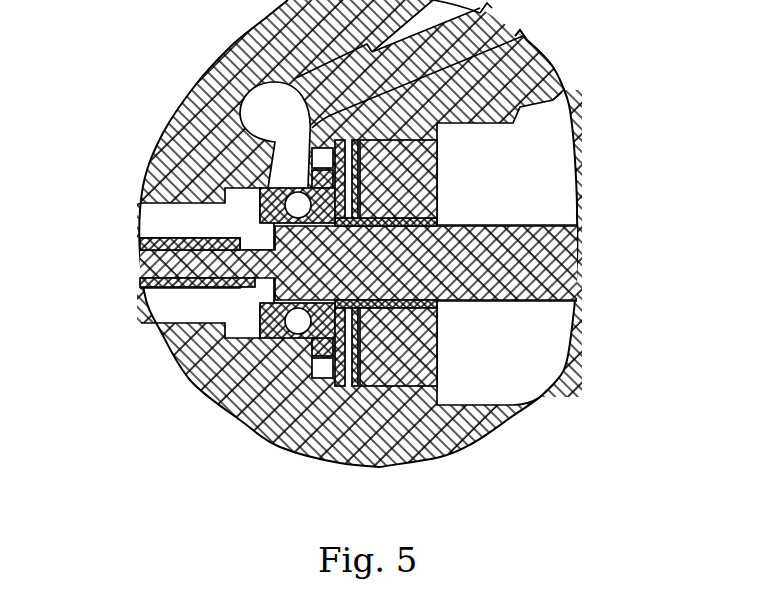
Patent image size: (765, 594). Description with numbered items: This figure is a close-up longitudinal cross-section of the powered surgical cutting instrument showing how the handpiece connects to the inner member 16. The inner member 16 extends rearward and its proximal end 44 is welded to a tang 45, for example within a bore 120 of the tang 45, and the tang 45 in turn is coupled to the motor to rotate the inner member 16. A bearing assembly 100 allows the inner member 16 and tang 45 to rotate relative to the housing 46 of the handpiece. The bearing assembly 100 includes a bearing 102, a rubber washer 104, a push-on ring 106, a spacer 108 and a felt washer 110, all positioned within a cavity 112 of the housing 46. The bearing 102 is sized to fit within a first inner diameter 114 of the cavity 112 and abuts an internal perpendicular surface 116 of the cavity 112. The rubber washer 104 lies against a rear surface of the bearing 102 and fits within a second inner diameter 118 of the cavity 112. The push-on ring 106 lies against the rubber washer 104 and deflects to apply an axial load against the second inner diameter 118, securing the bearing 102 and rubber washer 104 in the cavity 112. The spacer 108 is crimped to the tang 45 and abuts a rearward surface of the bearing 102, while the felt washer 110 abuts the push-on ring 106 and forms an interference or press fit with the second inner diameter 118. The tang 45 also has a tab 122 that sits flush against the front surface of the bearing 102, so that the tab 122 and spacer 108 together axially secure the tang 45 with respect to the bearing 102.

The inner member 16 is at (143, 265).
The proximal end of the inner member 44 is at (143, 222).
The tang 45 is at (578, 235).
The housing 46 is at (450, 433).
The bearing assembly 100 is at (306, 352).
The bearing 102 is at (225, 340).
The rubber washer 104 is at (338, 385).
The push-on ring 106 is at (350, 390).
The spacer 108 is at (440, 308).
The felt washer 110 is at (380, 392).
The cavity 112 is at (520, 172).
The first inner diameter 114 is at (272, 183).
The internal perpendicular surface 116 is at (305, 158).
The second inner diameter 118 is at (385, 133).
The bore 120 is at (180, 290).
The tab 122 is at (212, 337).